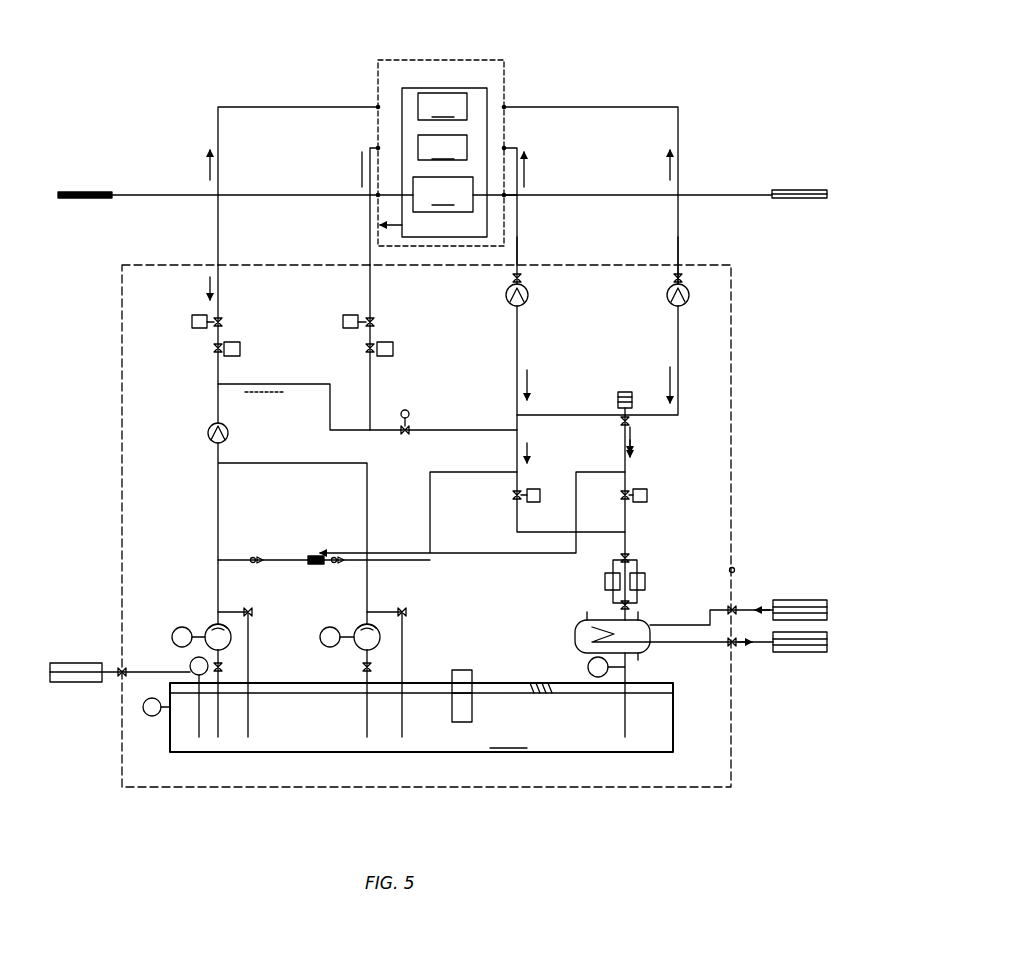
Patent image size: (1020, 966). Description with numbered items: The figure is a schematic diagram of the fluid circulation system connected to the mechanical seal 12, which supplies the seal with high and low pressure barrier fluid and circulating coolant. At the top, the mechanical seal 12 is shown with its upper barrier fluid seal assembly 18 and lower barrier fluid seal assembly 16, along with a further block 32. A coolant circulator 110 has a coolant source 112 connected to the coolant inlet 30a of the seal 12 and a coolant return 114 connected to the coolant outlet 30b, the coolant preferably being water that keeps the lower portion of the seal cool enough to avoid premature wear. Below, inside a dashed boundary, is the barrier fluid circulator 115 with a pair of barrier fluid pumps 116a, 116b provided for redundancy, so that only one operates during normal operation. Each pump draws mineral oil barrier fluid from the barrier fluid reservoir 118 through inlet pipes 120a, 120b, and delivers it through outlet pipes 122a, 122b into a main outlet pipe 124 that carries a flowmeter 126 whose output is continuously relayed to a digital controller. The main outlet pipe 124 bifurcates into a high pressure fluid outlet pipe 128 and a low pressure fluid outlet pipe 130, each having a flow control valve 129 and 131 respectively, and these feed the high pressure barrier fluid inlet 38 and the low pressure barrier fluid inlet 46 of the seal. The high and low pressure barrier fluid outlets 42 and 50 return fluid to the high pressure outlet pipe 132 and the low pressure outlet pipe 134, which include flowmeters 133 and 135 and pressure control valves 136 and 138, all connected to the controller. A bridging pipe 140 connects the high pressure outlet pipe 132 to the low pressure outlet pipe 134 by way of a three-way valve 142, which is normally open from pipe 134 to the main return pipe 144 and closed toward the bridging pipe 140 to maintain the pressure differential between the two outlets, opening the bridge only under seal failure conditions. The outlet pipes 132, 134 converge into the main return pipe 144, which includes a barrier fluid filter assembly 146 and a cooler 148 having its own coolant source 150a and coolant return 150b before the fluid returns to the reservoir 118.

The mechanical seal 12 is at (402, 82).
The upper barrier fluid seal assembly 18 is at (442, 106).
The lower barrier fluid seal assembly 16 is at (442, 147).
The filter 32 is at (443, 194).
The low pressure barrier fluid inlet 46 is at (378, 107).
The low pressure barrier fluid outlet 50 is at (504, 107).
The high pressure barrier fluid inlet 38 is at (378, 148).
The high pressure barrier fluid outlet 42 is at (504, 148).
The coolant circulator 110 is at (142, 180).
The coolant source 112 is at (93, 200).
The coolant return 114 is at (803, 188).
The coolant inlet 30a is at (372, 198).
The coolant outlet 30b is at (504, 195).
The high pressure outlet pipe 132 is at (520, 247).
The low pressure outlet pipe 134 is at (680, 243).
The barrier fluid circulator 115 is at (120, 367).
The flow control valve 131 is at (228, 347).
The flow control valve 129 is at (380, 345).
The low pressure fluid outlet pipe 130 is at (217, 368).
The high pressure fluid outlet pipe 128 is at (265, 382).
The flowmeter 133 is at (528, 292).
The flowmeter 135 is at (667, 298).
The bridging pipe 140 is at (573, 413).
The three-way valve 142 is at (623, 390).
The flowmeter 126 is at (207, 433).
The pressure control valve 136 is at (533, 480).
The pressure control valve 138 is at (643, 480).
The main outlet pipe 124 is at (210, 460).
The main return pipe 144 is at (630, 540).
The outlet pipe 122a is at (217, 575).
The outlet pipe 122b is at (370, 577).
The barrier fluid pump 116a is at (190, 615).
The barrier fluid pump 116b is at (345, 622).
The inlet pipe 120a is at (220, 723).
The inlet pipe 120b is at (367, 723).
The barrier fluid filter assembly 146 is at (603, 575).
The cooler 148 is at (578, 632).
The coolant source 150a is at (797, 653).
The coolant return 150b is at (797, 600).
The barrier fluid reservoir 118 is at (361, 704).